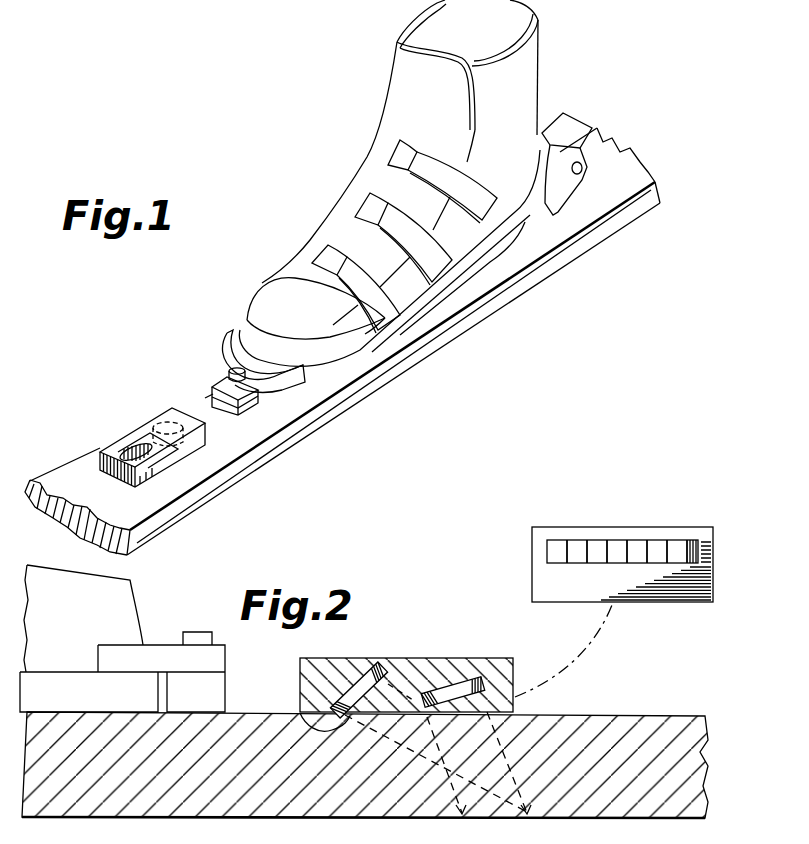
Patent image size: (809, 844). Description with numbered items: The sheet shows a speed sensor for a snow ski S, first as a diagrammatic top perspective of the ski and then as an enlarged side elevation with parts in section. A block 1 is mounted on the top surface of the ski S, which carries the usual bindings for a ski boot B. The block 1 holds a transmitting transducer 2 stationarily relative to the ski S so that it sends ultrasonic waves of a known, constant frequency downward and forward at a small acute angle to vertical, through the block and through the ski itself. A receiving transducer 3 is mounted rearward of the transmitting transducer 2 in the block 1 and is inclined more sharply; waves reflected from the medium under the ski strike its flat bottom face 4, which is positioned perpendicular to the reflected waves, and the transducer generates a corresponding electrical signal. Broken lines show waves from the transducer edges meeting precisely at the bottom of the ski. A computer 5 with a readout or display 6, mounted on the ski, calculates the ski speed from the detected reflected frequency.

In FIG. 1, the block 1 is at (138, 432).
In FIG. 2, the block 1 is at (408, 663).
In FIG. 1, the transmitting transducer 2 is at (153, 475).
In FIG. 2, the transmitting transducer 2 is at (460, 688).
In FIG. 1, the receiving transducer 3 is at (187, 455).
In FIG. 2, the receiving transducer 3 is at (357, 676).
In FIG. 2, the flat bottom face 4 is at (300, 713).
In FIG. 2, the computer 5 is at (532, 578).
In FIG. 2, the readout or display 6 is at (620, 540).
In FIG. 1, the ski boot B is at (527, 78).
In FIG. 2, the ski boot B is at (131, 611).
In FIG. 1, the snow ski S is at (275, 420).
In FIG. 2, the snow ski S is at (616, 712).